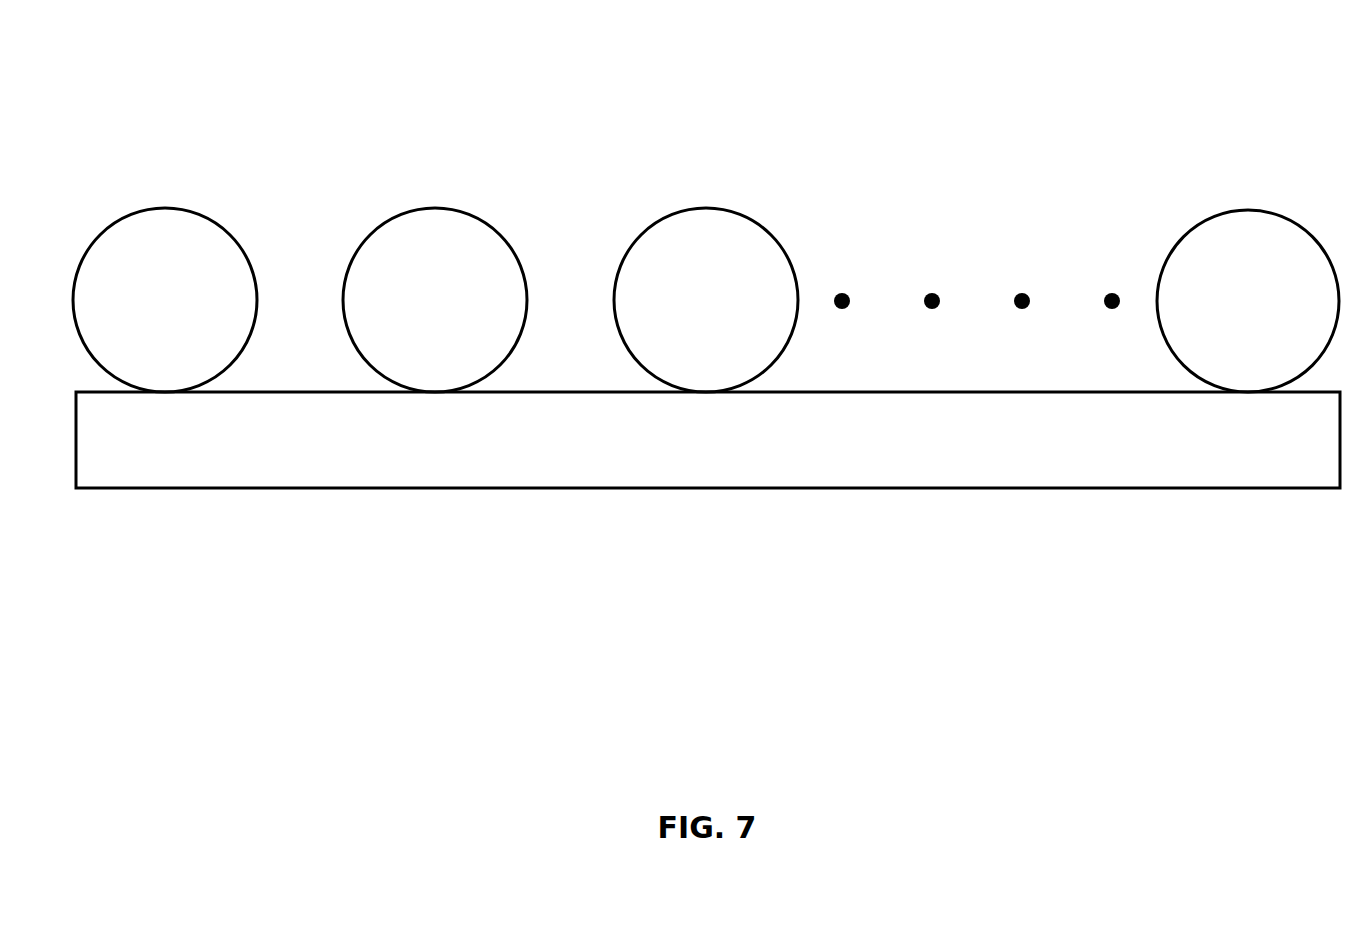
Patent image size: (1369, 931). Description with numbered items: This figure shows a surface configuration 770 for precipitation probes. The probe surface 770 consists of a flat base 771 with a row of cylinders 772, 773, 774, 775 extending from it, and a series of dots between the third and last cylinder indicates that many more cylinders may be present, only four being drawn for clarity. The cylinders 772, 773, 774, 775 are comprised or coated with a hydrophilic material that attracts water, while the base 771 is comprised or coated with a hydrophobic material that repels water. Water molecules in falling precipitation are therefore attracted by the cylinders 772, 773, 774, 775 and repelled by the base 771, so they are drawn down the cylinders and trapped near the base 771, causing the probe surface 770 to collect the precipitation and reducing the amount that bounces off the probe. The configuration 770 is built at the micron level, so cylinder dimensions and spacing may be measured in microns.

The surface configuration 770 is at (1158, 73).
The base 771 is at (708, 440).
The cylinder 772 is at (165, 300).
The cylinder 773 is at (435, 300).
The cylinder 774 is at (706, 300).
The cylinder 775 is at (1248, 301).